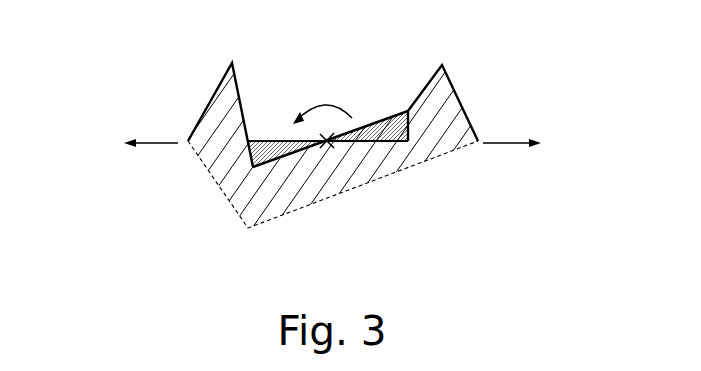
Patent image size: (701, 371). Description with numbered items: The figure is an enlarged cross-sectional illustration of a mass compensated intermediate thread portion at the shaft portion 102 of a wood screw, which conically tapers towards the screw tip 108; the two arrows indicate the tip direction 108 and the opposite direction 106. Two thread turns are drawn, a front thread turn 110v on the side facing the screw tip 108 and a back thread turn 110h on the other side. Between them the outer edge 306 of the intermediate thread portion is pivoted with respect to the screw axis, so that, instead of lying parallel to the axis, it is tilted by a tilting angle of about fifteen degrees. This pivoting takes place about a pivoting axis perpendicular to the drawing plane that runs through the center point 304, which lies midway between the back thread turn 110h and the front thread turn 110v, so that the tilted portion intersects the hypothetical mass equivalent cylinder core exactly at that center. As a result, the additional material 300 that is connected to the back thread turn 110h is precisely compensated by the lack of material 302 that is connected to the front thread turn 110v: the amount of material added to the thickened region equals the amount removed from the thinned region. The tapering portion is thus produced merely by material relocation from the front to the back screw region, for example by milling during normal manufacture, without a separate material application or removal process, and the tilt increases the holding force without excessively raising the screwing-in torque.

The shaft portion 102 is at (345, 175).
The first direction 106 is at (545, 157).
The screw tip 108 is at (73, 157).
The front thread turn 110v is at (222, 100).
The back thread turn 110h is at (437, 90).
The additional material 300 is at (393, 128).
The lack of material 302 is at (260, 158).
The center point 304 is at (327, 146).
The outer edge 306 is at (394, 109).